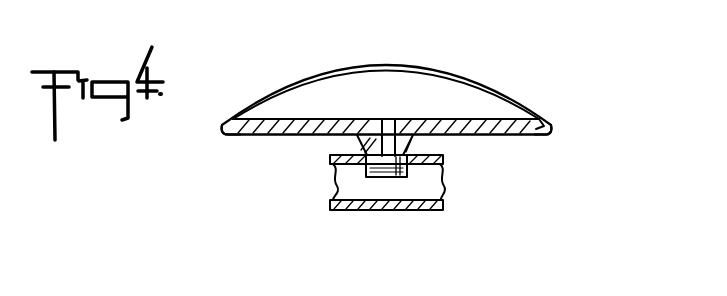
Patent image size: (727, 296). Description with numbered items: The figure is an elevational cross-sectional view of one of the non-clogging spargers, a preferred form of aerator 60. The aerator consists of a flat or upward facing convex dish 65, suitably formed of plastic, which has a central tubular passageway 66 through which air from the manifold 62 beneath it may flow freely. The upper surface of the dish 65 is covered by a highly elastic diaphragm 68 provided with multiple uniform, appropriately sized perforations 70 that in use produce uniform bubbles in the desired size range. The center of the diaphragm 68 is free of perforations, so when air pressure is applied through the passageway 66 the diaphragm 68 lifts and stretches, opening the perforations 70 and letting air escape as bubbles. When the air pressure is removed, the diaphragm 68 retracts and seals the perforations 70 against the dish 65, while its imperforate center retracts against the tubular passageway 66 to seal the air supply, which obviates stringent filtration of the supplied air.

The aerator 60 is at (510, 76).
The manifold 62 is at (415, 212).
The dish 65 is at (500, 135).
The central tubular passageway 66 is at (384, 140).
The diaphragm 68 is at (377, 33).
The perforations 70 is at (322, 80).